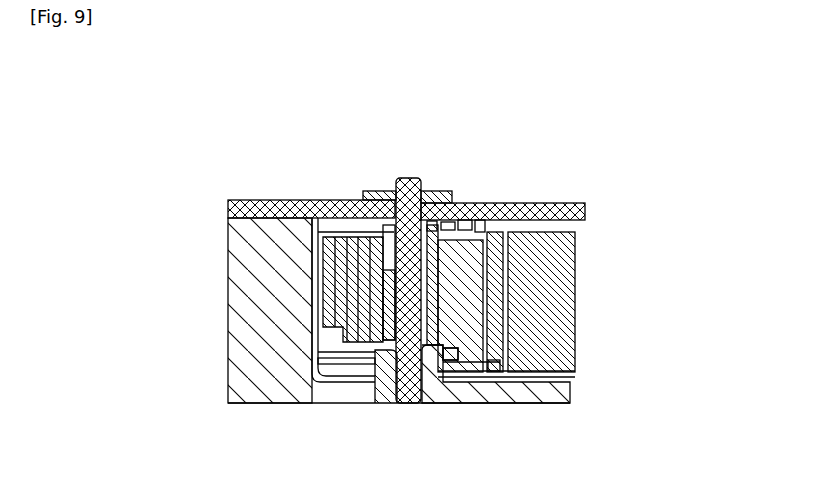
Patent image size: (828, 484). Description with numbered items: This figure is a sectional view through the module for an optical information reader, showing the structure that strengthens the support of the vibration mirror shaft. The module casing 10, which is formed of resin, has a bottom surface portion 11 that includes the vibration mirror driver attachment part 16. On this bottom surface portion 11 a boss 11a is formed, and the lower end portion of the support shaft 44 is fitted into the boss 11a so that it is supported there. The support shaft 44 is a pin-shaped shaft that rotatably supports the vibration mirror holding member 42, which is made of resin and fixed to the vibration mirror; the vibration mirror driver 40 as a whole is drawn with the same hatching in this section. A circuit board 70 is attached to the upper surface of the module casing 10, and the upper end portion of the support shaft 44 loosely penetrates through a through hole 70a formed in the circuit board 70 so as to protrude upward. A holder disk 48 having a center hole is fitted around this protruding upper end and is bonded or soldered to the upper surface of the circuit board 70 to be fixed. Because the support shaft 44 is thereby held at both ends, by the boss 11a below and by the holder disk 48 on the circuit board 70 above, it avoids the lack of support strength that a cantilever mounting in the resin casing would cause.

The module casing 10 is at (248, 295).
The bottom surface portion 11 is at (333, 373).
The boss 11a is at (372, 364).
The vibration mirror driver attachment part 16 is at (322, 232).
The vibration mirror driver 40 is at (612, 268).
The vibration mirror holding member 42 is at (462, 330).
The support shaft 44 is at (405, 398).
The holder disk 48 is at (445, 192).
The circuit board 70 is at (526, 203).
The through hole 70a is at (394, 190).